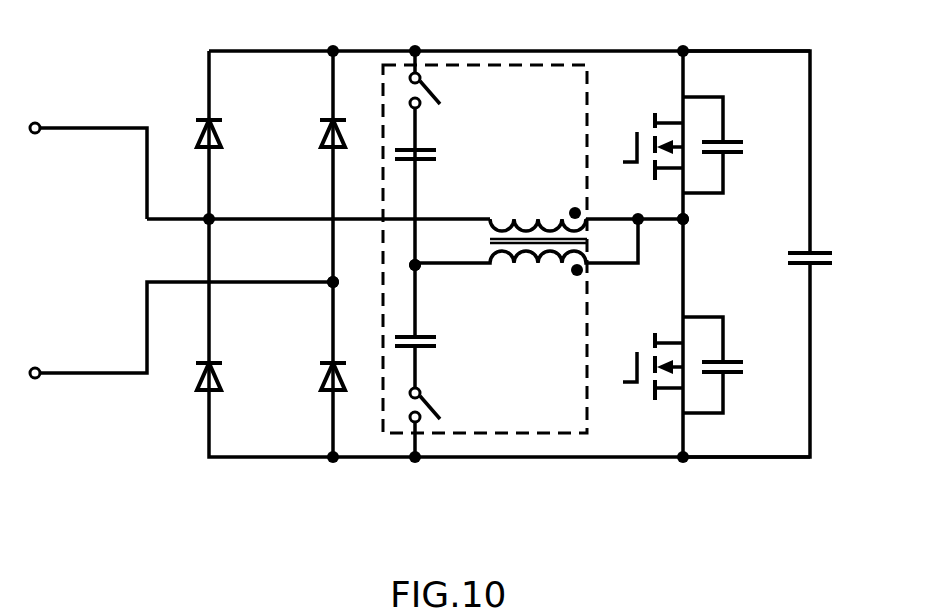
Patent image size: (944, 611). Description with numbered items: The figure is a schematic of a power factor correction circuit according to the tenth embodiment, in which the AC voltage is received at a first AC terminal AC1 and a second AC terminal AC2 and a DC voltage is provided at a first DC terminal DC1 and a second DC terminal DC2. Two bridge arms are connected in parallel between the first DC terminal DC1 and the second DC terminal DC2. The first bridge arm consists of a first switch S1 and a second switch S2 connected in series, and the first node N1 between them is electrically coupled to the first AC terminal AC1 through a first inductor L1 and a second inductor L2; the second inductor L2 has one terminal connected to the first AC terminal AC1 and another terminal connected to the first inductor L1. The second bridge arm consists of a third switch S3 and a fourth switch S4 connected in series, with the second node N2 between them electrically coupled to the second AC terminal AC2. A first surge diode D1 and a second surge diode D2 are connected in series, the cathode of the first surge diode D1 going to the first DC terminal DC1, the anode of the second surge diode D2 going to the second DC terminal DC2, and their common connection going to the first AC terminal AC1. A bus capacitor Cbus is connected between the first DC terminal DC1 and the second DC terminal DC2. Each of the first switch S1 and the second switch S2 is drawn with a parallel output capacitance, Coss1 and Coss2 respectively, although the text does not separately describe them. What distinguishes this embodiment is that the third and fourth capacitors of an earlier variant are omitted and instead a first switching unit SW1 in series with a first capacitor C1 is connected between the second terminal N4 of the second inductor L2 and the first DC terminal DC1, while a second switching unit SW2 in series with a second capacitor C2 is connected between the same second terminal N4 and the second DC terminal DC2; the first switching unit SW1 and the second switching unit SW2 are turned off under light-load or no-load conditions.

The first AC terminal AC1 is at (88, 156).
The second AC terminal AC2 is at (181, 330).
The first surge diode D1 is at (194, 120).
The second surge diode D2 is at (194, 393).
The third switch S3 is at (350, 138).
The fourth switch S4 is at (350, 380).
The first switch S1 is at (643, 146).
The second switch S2 is at (643, 366).
The first switching unit SW1 is at (454, 94).
The second switching unit SW2 is at (454, 409).
The first capacitor C1 is at (432, 153).
The second capacitor C2 is at (429, 330).
The first inductor L1 is at (538, 215).
The second inductor L2 is at (526, 262).
The first node N1 is at (702, 236).
The second node N2 is at (319, 298).
The second terminal of the second inductor N4 is at (400, 270).
The output capacitance Coss1 of S1 Coss1 is at (743, 145).
The output capacitance Coss2 of S2 Coss2 is at (743, 365).
The bus capacitor Cbus is at (830, 276).
The first DC terminal DC1 is at (746, 69).
The second DC terminal DC2 is at (746, 441).